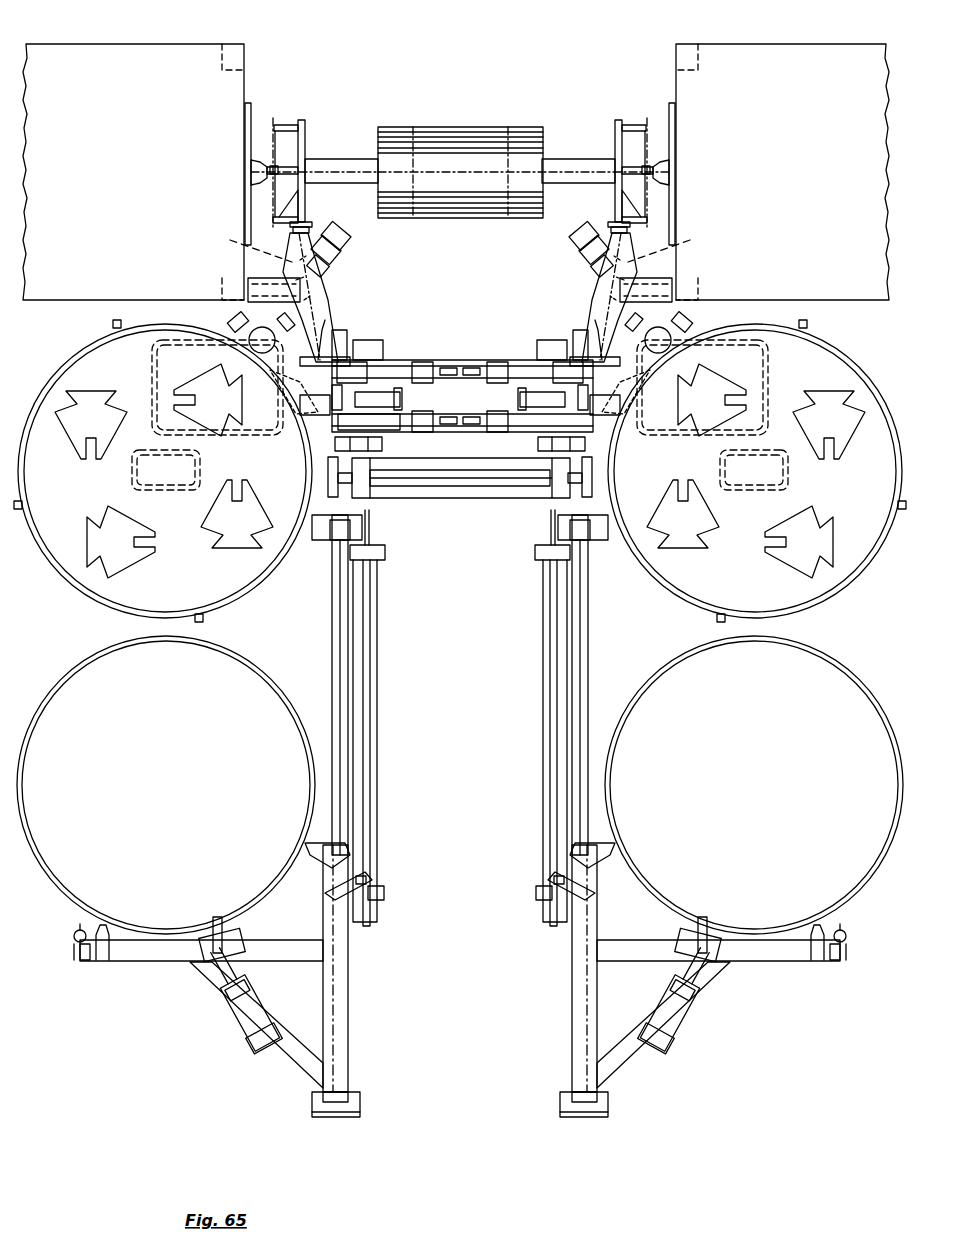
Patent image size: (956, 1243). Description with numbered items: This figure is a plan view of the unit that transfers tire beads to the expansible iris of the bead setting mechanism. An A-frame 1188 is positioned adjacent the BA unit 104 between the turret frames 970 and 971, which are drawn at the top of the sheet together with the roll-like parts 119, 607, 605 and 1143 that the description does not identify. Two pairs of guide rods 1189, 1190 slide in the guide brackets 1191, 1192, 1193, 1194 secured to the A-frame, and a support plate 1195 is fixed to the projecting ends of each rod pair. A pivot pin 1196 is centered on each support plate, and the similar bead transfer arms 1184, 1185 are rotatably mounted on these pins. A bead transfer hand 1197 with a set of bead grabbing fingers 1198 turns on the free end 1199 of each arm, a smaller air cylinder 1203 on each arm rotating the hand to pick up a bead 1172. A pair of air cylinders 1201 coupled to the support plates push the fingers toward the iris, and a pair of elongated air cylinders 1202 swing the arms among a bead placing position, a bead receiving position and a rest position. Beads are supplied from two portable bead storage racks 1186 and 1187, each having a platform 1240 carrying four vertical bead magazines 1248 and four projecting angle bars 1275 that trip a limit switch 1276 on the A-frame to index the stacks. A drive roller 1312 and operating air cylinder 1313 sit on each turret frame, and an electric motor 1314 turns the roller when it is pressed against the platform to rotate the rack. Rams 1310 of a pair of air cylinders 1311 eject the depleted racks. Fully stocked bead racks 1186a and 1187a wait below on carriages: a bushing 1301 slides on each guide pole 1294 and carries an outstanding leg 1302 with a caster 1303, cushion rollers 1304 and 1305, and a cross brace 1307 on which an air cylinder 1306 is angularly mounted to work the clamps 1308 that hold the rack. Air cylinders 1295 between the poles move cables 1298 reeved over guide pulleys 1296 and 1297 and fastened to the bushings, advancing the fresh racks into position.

The turret frame 971 is at (250, 50).
The turret frame 970 is at (670, 50).
The BA unit 104 is at (402, 126).
The roll 119 is at (448, 127).
The roll shaft 607 is at (340, 159).
The bead 1172 is at (247, 104).
The bead grabbing fingers 1198 is at (285, 125).
The bead transfer hand 1197 is at (302, 120).
The shaft bearing arm 605 is at (272, 167).
The cone coupling 1143 is at (248, 172).
The free end 1199 is at (300, 222).
The smaller air cylinder 1203 is at (236, 240).
The drive roller 1312 is at (222, 293).
The operating air cylinder 1313 is at (348, 240).
The bead transfer arm 1185 is at (330, 280).
The bead transfer arm 1184 is at (588, 280).
The limit switch 1276 is at (305, 410).
The A-frame 1188 is at (461, 358).
The air cylinder 1201 is at (352, 370).
The guide bracket 1193 is at (505, 410).
The guide bracket 1192 is at (362, 340).
The guide rod 1189 is at (418, 360).
The guide bracket 1191 is at (487, 360).
The guide rod 1190 is at (405, 428).
The guide bracket 1194 is at (370, 438).
The elongated air cylinder 1202 is at (325, 318).
The electric motor 1314 is at (318, 330).
The air cylinder 1311 is at (448, 487).
The ram 1310 is at (327, 478).
The bead storage rack 1187 is at (234, 603).
The bead storage rack 1186 is at (686, 603).
The bead magazine 1248 is at (92, 392).
The pivot pin 1196 is at (300, 380).
The support plate 1195 is at (300, 400).
The platform 1240 is at (106, 612).
The projecting angle bar 1275 is at (117, 320).
The fully stocked bead rack 1187a is at (300, 695).
The fully stocked bead rack 1186a is at (620, 695).
The guide pulley 1296 is at (375, 530).
The guide pole 1294 is at (332, 631).
The air cylinder 1295 is at (378, 655).
The cable 1298 is at (370, 693).
The guide pulley 1297 is at (372, 920).
The cushion roller 1304 is at (305, 848).
The bushing 1301 is at (349, 1002).
The outstanding leg 1302 is at (170, 962).
The caster 1303 is at (76, 945).
The cushion roller 1305 is at (103, 925).
The clamp 1308 is at (217, 917).
The air cylinder 1306 is at (236, 1018).
The cross brace 1307 is at (292, 1060).